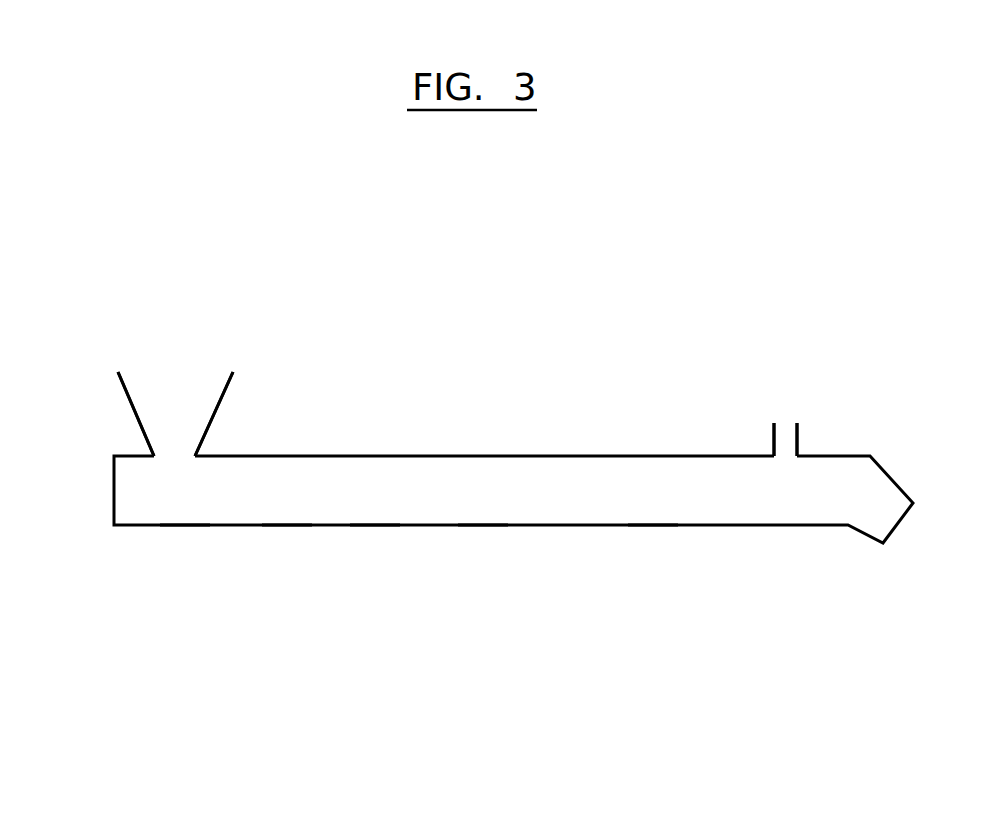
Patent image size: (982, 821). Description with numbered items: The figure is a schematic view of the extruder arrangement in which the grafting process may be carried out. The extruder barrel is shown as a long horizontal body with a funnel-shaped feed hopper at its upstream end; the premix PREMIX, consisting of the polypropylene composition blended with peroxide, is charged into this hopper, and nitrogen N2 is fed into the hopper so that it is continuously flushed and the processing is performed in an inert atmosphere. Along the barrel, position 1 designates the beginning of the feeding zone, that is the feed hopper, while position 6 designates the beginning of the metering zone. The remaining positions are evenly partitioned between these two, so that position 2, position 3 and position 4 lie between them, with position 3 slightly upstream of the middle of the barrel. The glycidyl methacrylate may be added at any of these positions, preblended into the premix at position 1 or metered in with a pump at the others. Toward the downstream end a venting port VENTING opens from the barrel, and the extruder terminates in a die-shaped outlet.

The position 1 is at (176, 506).
The position 2 is at (279, 506).
The position 3 is at (367, 506).
The position 4 is at (475, 506).
The position 6 is at (645, 506).
The nitrogen N2 is at (99, 387).
The premix PREMIX is at (194, 369).
The venting VENTING is at (787, 437).